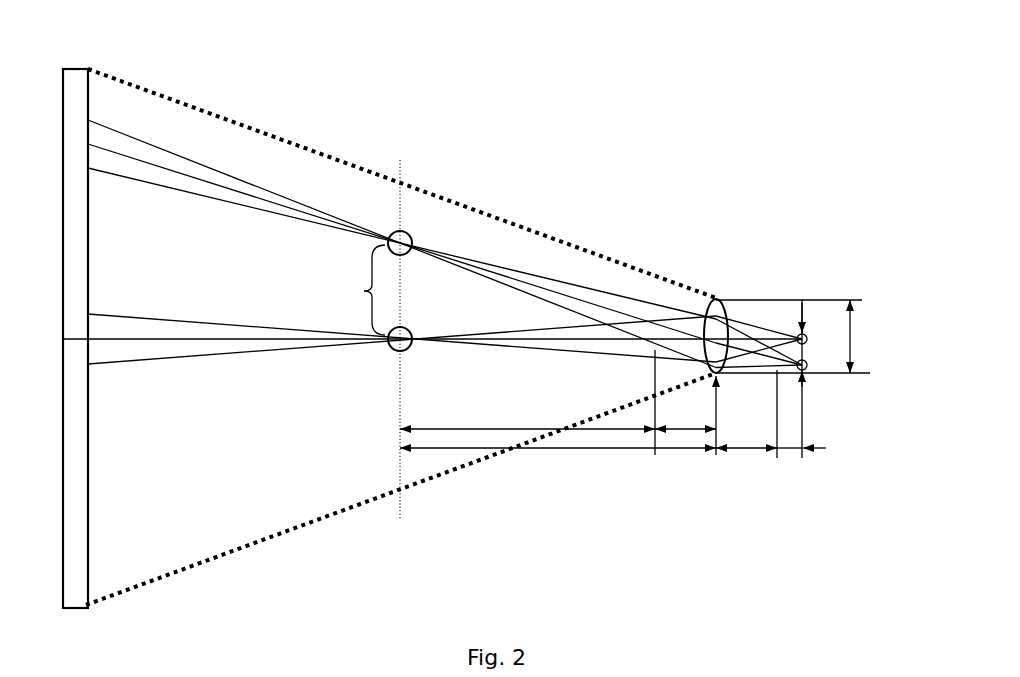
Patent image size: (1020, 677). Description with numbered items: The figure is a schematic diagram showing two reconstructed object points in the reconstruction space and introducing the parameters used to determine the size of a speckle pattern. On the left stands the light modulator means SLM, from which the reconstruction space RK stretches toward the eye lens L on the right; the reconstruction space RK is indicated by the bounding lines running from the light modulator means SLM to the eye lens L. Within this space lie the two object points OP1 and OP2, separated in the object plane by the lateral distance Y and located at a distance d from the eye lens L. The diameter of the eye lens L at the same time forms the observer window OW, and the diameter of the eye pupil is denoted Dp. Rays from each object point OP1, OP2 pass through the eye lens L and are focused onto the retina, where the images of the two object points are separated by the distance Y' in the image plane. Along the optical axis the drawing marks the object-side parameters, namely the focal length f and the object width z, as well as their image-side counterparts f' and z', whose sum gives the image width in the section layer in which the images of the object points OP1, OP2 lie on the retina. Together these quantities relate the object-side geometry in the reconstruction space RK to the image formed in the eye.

The light modulator means SLM is at (98, 338).
The reconstruction space RK is at (308, 153).
The object point OP1 is at (407, 227).
The object point OP2 is at (407, 358).
The lateral distance in the object plane Y is at (363, 290).
The eye lens L is at (724, 322).
The observer window OW is at (716, 296).
The distance between the images of the object points Y' is at (815, 379).
The diameter of the eye pupil Dp is at (867, 336).
The object width z is at (527, 411).
The focal length f is at (685, 412).
The distance d is at (558, 465).
The image-side focal length f' is at (746, 431).
The image-side object width z' is at (807, 431).